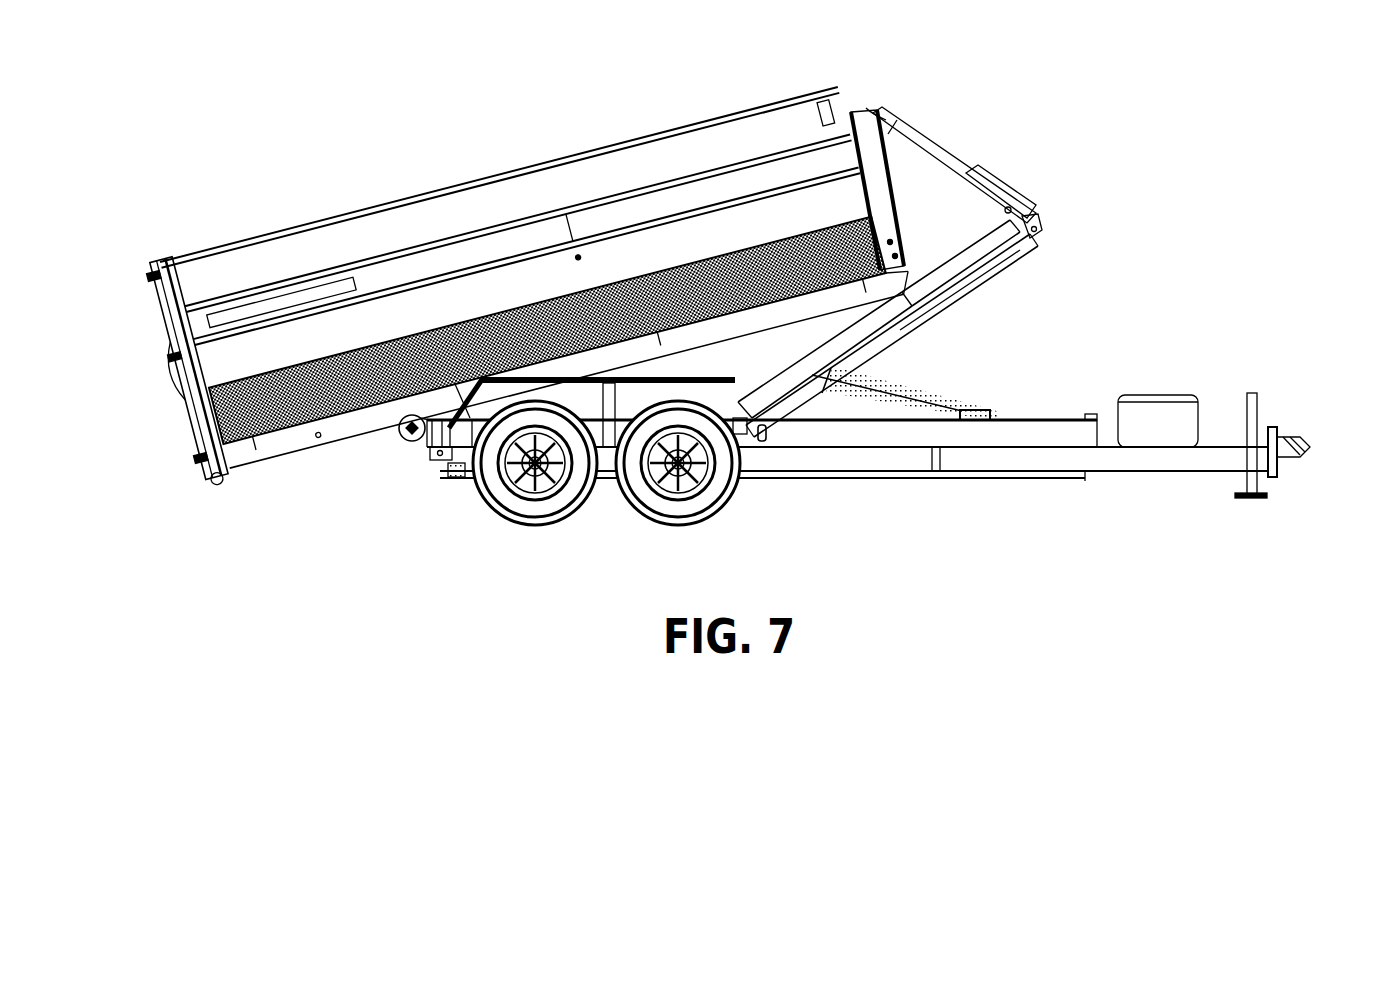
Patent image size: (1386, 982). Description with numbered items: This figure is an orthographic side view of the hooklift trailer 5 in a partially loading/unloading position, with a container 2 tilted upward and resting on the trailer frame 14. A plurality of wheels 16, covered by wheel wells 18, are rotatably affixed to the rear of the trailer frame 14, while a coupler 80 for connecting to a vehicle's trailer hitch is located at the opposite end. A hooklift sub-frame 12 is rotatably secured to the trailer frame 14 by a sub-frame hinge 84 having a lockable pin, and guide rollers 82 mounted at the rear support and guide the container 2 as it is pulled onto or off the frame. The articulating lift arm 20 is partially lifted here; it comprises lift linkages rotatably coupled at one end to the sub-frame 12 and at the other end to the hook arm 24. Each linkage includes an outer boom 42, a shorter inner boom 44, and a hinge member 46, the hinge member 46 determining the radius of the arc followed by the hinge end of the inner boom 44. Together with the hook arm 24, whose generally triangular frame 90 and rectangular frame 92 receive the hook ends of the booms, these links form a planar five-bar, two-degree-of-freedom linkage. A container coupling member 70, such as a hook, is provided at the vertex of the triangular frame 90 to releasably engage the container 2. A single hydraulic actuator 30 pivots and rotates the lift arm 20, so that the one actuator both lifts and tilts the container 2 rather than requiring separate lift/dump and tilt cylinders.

The container 2 is at (385, 220).
The hooklift trailer 5 is at (1034, 527).
The hooklift sub-frame 12 is at (866, 437).
The trailer frame 14 is at (1115, 460).
The wheels 16 is at (528, 513).
The wheel wells 18 is at (747, 437).
The lift arm 20 is at (992, 270).
The hook arm 24 is at (942, 140).
The hydraulic actuator 30 is at (895, 392).
The outer boom 42 is at (940, 288).
The inner boom 44 is at (935, 292).
The hinge member 46 is at (760, 445).
The container coupling member 70 is at (870, 116).
The coupler 80 is at (1307, 448).
The guide rollers 82 is at (402, 425).
The sub-frame hinge 84 is at (445, 458).
The triangular frame 90 is at (960, 185).
The rectangular frame 92 is at (1018, 215).